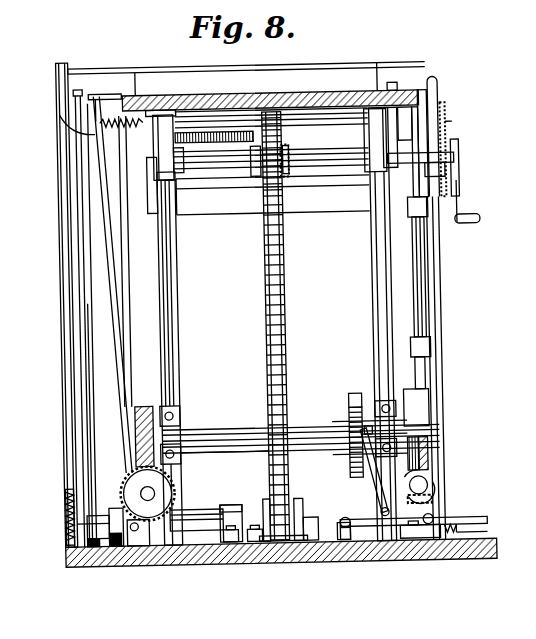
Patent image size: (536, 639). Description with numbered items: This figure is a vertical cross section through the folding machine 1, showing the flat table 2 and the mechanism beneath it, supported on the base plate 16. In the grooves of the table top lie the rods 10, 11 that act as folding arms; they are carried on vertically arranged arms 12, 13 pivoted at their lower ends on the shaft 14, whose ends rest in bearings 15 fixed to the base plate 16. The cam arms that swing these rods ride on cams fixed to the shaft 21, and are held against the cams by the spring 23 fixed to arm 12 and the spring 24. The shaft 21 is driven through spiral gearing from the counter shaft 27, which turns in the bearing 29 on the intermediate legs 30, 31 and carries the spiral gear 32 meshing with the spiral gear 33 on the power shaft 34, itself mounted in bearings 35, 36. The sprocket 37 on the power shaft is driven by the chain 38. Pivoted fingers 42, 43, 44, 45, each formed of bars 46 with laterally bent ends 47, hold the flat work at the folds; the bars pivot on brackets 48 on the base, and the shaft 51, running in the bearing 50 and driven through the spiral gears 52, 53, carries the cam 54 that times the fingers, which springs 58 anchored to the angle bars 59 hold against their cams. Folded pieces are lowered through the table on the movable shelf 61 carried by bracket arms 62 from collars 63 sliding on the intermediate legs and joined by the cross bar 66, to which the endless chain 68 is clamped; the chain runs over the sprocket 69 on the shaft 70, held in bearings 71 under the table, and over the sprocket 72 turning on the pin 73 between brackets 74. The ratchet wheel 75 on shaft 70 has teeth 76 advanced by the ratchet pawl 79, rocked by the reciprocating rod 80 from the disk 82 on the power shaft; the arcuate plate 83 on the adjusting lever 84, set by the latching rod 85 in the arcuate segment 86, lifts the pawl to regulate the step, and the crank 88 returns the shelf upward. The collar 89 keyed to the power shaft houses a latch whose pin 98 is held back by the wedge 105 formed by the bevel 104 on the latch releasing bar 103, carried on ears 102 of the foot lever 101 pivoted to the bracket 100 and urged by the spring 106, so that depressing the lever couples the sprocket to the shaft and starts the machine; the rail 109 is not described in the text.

The folding machine 1 is at (134, 62).
The table 2 is at (141, 98).
The rod 10 is at (76, 68).
The rod 11 is at (96, 94).
The arm 12 is at (66, 283).
The arm 13 is at (80, 203).
The shaft 14 is at (200, 520).
The bearings 15 is at (228, 505).
The base plate 16 is at (318, 522).
The shaft 21 is at (214, 452).
The spring 23 is at (68, 500).
The spring 24 is at (95, 547).
The counter shaft 27 is at (133, 535).
The bearing 29 is at (168, 513).
The intermediate leg 30 is at (172, 302).
The intermediate leg 31 is at (378, 290).
The spiral gear 32 is at (130, 495).
The spiral gear 33 is at (152, 400).
The power shaft 34 is at (240, 433).
The bearing 35 is at (172, 415).
The bearing 36 is at (364, 400).
The sprocket 37 is at (355, 410).
The chain 38 is at (350, 462).
The pivoted finger 42 is at (428, 240).
The pivoted finger 43 is at (65, 160).
The pivoted finger 44 is at (436, 275).
The pivoted finger 45 is at (95, 135).
The bars 46 is at (123, 320).
The laterally bent ends 47 is at (391, 92).
The brackets 48 is at (418, 535).
The bearing 50 is at (420, 468).
The shaft 51 is at (420, 490).
The spiral gear 52 is at (425, 452).
The spiral gear 53 is at (428, 505).
The cam 54 is at (442, 483).
The springs 58 is at (124, 128).
The angle bars 59 is at (171, 99).
The movable shelf 61 is at (313, 130).
The bracket arms 62 is at (186, 152).
The collars 63 is at (155, 200).
The cross bar 66 is at (350, 210).
The endless chain 68 is at (279, 280).
The sprocket 69 is at (283, 190).
The shaft 70 is at (242, 166).
The bearings 71 is at (168, 166).
The sprocket 72 is at (280, 547).
The pin 73 is at (255, 500).
The brackets 74 is at (262, 545).
The ratchet wheel 75 is at (426, 141).
The teeth 76 is at (441, 178).
The ratchet pawl 79 is at (441, 106).
The reciprocating rod 80 is at (418, 310).
The disk 82 is at (410, 422).
The arcuate plate 83 is at (418, 130).
The adjusting lever 84 is at (434, 92).
The latching rod 85 is at (452, 127).
The arcuate segment 86 is at (430, 150).
The crank 88 is at (470, 216).
The collar 89 is at (362, 430).
The pin 98 is at (370, 432).
The bracket 100 is at (345, 540).
The foot lever 101 is at (470, 520).
The ears 102 is at (378, 500).
The latch releasing bar 103 is at (350, 445).
The bevel 104 is at (410, 440).
The wedge 105 is at (340, 430).
The spring 106 is at (480, 527).
The top rail 109 is at (291, 64).